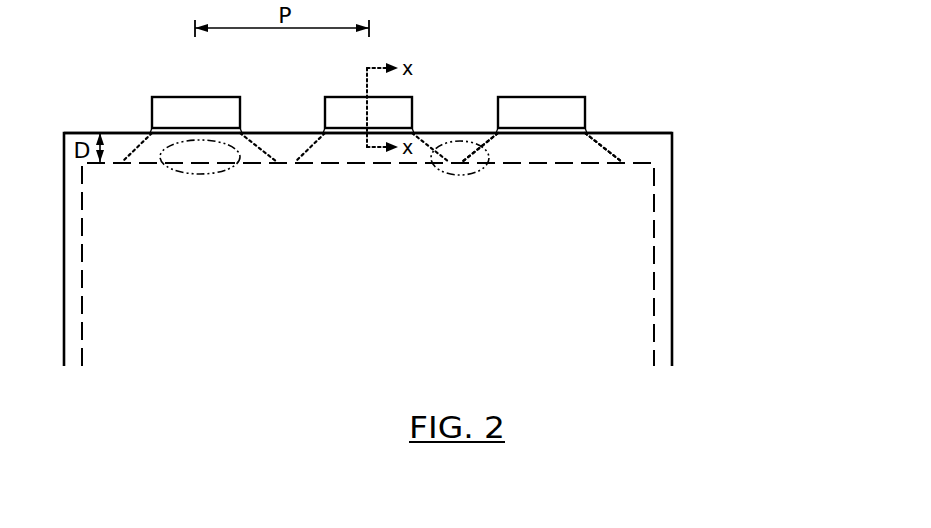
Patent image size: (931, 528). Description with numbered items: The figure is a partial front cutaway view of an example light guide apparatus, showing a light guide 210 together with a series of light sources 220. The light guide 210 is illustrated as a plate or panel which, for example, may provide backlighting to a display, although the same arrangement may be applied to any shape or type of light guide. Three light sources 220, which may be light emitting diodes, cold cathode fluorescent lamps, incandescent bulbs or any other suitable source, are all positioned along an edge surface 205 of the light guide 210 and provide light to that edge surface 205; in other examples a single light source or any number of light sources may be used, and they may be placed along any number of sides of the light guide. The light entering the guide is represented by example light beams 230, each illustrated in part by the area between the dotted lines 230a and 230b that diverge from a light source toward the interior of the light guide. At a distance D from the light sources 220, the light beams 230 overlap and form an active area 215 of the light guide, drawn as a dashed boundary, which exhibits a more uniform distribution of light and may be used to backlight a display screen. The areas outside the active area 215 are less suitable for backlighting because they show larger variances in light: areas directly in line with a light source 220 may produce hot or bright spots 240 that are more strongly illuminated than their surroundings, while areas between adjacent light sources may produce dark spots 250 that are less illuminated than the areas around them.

The edge surface 205 is at (120, 133).
The light guide 210 is at (654, 199).
The active area 215 is at (593, 262).
The light source 220 is at (220, 110).
The light beam 230 is at (585, 148).
The dotted line 230a is at (488, 147).
The dotted line 230b is at (607, 148).
The hot or bright spot 240 is at (198, 172).
The dark spot 250 is at (460, 168).